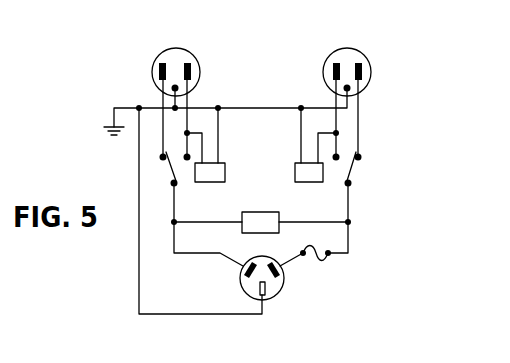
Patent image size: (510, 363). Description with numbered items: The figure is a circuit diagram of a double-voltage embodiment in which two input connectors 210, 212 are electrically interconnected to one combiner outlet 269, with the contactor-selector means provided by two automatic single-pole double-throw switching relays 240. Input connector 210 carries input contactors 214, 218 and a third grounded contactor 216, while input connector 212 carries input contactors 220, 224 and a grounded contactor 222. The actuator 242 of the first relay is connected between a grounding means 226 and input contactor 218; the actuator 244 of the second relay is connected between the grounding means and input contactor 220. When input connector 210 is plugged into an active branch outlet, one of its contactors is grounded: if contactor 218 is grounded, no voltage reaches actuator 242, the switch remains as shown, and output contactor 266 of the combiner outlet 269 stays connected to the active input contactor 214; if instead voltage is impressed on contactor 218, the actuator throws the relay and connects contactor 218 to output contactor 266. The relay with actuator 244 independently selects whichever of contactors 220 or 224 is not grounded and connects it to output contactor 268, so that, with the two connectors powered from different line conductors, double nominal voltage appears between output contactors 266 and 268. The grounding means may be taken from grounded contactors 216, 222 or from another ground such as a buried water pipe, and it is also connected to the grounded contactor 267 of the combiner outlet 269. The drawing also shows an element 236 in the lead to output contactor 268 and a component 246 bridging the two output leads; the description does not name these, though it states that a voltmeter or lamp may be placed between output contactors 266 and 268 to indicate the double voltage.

The input connector 210 is at (175, 49).
The input connector 212 is at (347, 49).
The input contactor 214 is at (160, 64).
The grounded contactor 216 is at (171, 90).
The input contactor 218 is at (191, 64).
The input contactor 220 is at (332, 64).
The grounded contactor 222 is at (352, 90).
The input contactor 224 is at (362, 64).
The grounding means 226 is at (104, 129).
The fuse 236 is at (305, 243).
The switching relay 240 is at (166, 168).
The actuator 242 is at (210, 182).
The actuator 244 is at (310, 182).
The load element 246 is at (263, 203).
The output contactor 266 is at (244, 272).
The combiner outlet grounded contactor 267 is at (256, 290).
The output contactor 268 is at (283, 275).
The combiner outlet 269 is at (258, 290).